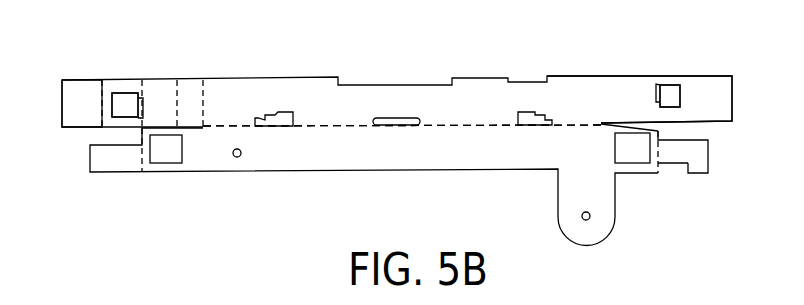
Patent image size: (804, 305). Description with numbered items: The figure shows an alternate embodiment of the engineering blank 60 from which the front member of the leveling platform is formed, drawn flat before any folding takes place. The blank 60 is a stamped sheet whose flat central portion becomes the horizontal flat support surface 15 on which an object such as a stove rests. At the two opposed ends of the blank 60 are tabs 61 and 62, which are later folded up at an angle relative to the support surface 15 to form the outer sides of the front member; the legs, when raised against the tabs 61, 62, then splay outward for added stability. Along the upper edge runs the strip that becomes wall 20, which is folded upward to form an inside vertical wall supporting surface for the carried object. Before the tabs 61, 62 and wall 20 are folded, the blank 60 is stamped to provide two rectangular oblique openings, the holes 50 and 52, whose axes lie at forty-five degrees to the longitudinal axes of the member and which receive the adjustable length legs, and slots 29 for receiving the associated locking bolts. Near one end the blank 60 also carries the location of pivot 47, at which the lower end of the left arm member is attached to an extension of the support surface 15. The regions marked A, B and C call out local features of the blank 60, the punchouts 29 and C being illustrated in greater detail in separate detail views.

The wall 20 is at (473, 95).
The tab 61 is at (80, 98).
The tab 62 is at (723, 90).
The slots 29 is at (143, 107).
The horizontal flat support surface 15 is at (527, 153).
The rectangular hole 50 is at (162, 157).
The rectangular hole 52 is at (622, 145).
The pivot 47 is at (589, 219).
The blank 60 is at (353, 187).
The detail A is at (123, 117).
The detail B is at (681, 94).
The punchout C is at (290, 115).